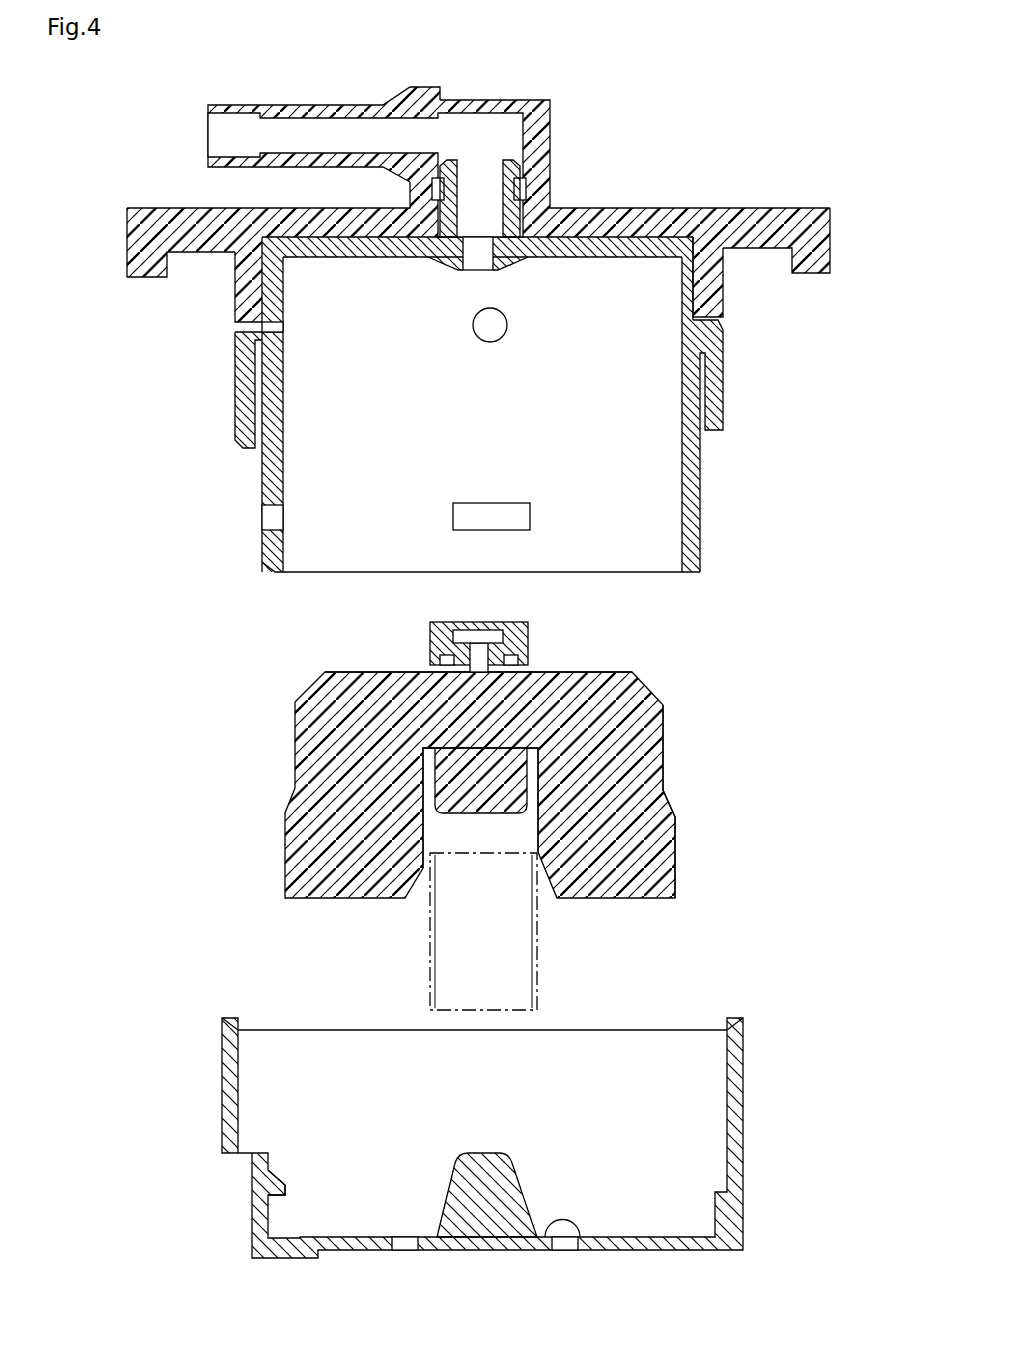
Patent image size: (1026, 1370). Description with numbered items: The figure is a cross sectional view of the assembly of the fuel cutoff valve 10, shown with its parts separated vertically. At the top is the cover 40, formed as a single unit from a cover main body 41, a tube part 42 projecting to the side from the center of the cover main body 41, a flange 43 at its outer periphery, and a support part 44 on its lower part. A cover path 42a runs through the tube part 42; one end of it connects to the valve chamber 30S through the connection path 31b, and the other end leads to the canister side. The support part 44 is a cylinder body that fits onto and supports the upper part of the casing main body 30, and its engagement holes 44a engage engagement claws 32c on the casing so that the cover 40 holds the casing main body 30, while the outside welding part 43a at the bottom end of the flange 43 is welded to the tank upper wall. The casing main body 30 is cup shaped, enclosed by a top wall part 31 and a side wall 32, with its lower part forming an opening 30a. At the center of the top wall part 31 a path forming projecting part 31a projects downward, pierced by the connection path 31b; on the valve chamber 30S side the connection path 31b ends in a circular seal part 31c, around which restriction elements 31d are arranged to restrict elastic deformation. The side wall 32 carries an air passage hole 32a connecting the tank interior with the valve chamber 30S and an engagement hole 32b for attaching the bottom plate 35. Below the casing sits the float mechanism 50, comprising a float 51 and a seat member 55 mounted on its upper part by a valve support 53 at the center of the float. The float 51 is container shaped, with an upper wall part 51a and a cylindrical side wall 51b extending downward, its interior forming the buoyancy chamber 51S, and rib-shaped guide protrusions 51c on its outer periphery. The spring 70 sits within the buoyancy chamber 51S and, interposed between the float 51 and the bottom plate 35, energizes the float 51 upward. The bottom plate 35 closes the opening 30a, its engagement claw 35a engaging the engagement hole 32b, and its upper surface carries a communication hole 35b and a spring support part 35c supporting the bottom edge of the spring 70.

The fuel cutoff valve 10 is at (770, 99).
The cover 40 is at (70, 112).
The cover main body 41 is at (280, 217).
The tube part 42 is at (212, 104).
The cover path 42a is at (317, 132).
The flange 43 is at (157, 257).
The outside welding part 43a is at (820, 268).
The support part 44 is at (243, 253).
The engagement holes 44a is at (713, 340).
The casing main body 30 is at (118, 307).
The top wall part 31 is at (258, 260).
The path forming projecting part 31a is at (458, 262).
The connection path 31b is at (525, 212).
The seal part 31c is at (487, 245).
The restriction element 31d is at (505, 260).
The side wall 32 is at (272, 383).
The air passage hole 32a is at (276, 333).
The engagement hole 32b is at (262, 522).
The engagement claws 32c is at (710, 330).
The valve chamber 30S is at (613, 466).
The opening 30a is at (612, 575).
The float mechanism 50 is at (676, 696).
The float 51 is at (667, 740).
The upper wall part 51a is at (592, 674).
The side wall 51b is at (665, 772).
The guide protrusions 51c is at (672, 828).
The buoyancy chamber 51S is at (517, 830).
The valve support 53 is at (528, 634).
The seat member 55 is at (443, 622).
The spring 70 is at (537, 962).
The bottom plate 35 is at (262, 1250).
The engagement claw 35a is at (258, 1185).
The communication hole 35b is at (403, 1242).
The spring support part 35c is at (560, 1240).